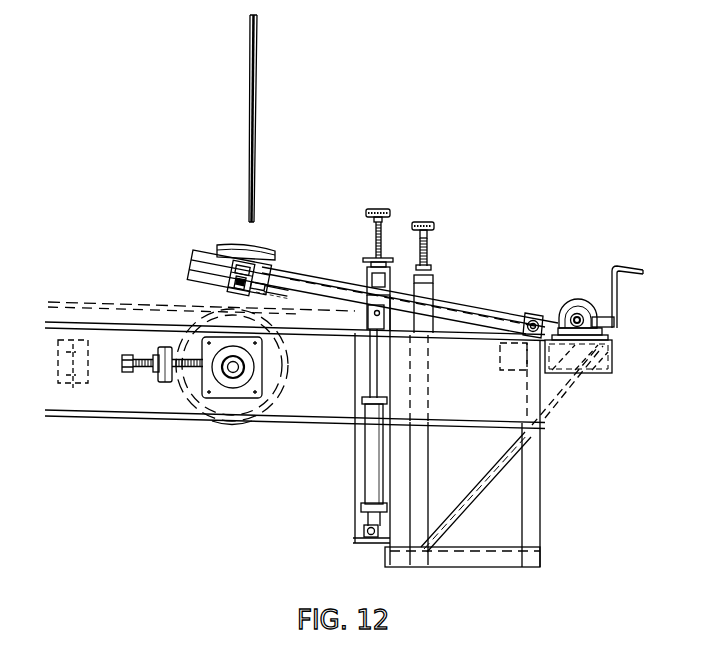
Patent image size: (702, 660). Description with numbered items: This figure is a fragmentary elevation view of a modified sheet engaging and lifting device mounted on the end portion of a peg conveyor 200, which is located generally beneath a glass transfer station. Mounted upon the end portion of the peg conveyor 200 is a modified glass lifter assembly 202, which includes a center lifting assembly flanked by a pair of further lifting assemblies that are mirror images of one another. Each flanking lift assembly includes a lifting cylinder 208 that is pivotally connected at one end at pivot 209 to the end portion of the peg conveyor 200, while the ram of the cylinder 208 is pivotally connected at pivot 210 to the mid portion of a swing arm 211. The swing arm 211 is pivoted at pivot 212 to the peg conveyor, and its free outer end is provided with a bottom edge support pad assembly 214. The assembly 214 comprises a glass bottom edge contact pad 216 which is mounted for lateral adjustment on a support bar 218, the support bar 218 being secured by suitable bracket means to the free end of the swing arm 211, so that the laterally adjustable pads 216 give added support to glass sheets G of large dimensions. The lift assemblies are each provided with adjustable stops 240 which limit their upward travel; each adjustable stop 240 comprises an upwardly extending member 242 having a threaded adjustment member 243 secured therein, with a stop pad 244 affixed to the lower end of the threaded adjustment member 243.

The gauge rod G is at (255, 112).
The end portion of peg conveyor 200 is at (536, 407).
The modified glass lifter assembly 202 is at (423, 259).
The lifting cylinder 208 is at (375, 434).
The pivotal connection 209 is at (366, 533).
The pivotal connection 210 is at (370, 315).
The swing arm 211 is at (442, 312).
The pivot 212 is at (536, 320).
The bottom edge support pad assembly 214 is at (256, 292).
The glass bottom edge contact pad 216 is at (222, 247).
The support bar 218 is at (250, 272).
The adjustable stop 240 is at (386, 211).
The upwardly extending member 242 is at (368, 272).
The threaded adjustment member 243 is at (377, 257).
The stop pad 244 is at (375, 287).